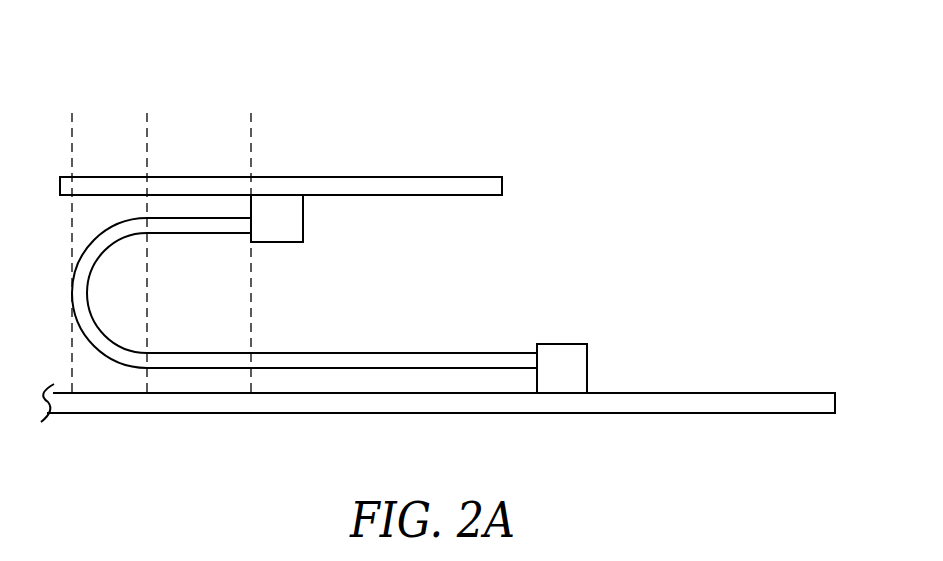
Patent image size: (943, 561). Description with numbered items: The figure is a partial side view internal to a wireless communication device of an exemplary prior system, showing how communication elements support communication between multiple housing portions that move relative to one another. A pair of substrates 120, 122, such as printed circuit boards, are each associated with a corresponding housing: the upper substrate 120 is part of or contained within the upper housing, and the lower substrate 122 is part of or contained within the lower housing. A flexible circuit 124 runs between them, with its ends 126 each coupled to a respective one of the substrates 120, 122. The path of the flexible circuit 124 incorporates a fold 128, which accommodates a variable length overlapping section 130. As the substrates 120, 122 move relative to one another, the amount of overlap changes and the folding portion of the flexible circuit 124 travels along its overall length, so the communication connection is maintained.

The substrate 120 is at (475, 182).
The substrate 122 is at (748, 400).
The flexible circuit 124 is at (361, 353).
The ends of the flexible circuit 126 is at (303, 217).
The fold 128 is at (147, 113).
The variable length overlapping section 130 is at (251, 113).